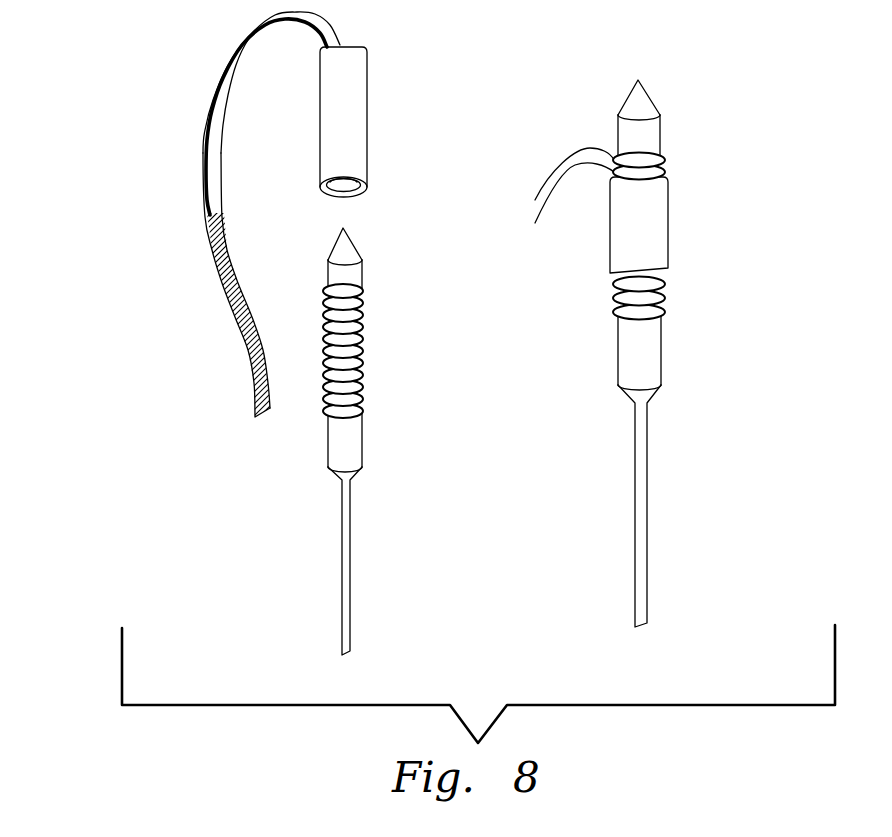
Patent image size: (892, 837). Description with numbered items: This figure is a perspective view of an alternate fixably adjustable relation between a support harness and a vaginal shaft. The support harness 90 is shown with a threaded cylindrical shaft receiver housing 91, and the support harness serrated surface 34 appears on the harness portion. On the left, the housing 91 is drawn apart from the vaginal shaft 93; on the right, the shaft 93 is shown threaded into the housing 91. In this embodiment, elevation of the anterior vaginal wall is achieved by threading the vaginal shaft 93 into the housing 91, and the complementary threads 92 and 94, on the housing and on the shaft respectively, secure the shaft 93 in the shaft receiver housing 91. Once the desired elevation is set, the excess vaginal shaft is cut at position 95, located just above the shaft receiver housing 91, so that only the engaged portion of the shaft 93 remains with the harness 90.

The support harness serrated surface 34 is at (236, 287).
The support harness 90 is at (337, 26).
The threaded cylindrical shaft receiver housing 91 is at (366, 103).
The complementary threads 92 is at (350, 191).
The vaginal shaft 93 is at (351, 541).
The complementary threads 94 is at (363, 348).
The cutting position 95 is at (672, 173).